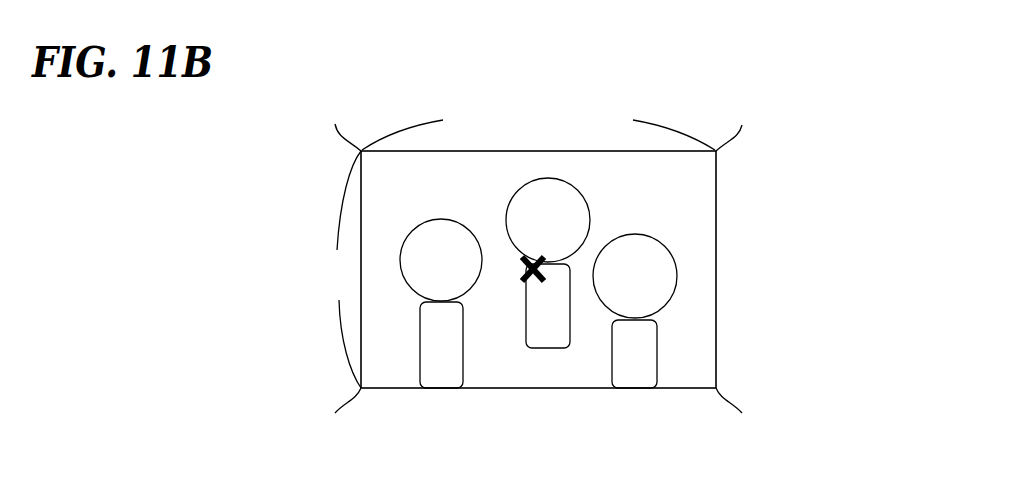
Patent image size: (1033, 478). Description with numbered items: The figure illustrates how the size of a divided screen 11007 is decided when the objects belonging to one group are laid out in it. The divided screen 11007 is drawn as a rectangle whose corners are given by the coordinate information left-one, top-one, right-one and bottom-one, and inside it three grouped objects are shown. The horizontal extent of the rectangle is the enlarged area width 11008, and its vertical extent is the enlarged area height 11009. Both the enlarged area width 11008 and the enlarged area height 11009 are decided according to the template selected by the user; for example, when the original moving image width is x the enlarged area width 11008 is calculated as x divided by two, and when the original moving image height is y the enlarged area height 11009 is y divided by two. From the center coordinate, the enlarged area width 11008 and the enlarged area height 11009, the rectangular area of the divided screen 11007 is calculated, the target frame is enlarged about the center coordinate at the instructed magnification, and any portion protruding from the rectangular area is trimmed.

The divided screen 11007 is at (705, 305).
The enlarged area width 11008 is at (610, 52).
The enlarged area height 11009 is at (260, 242).